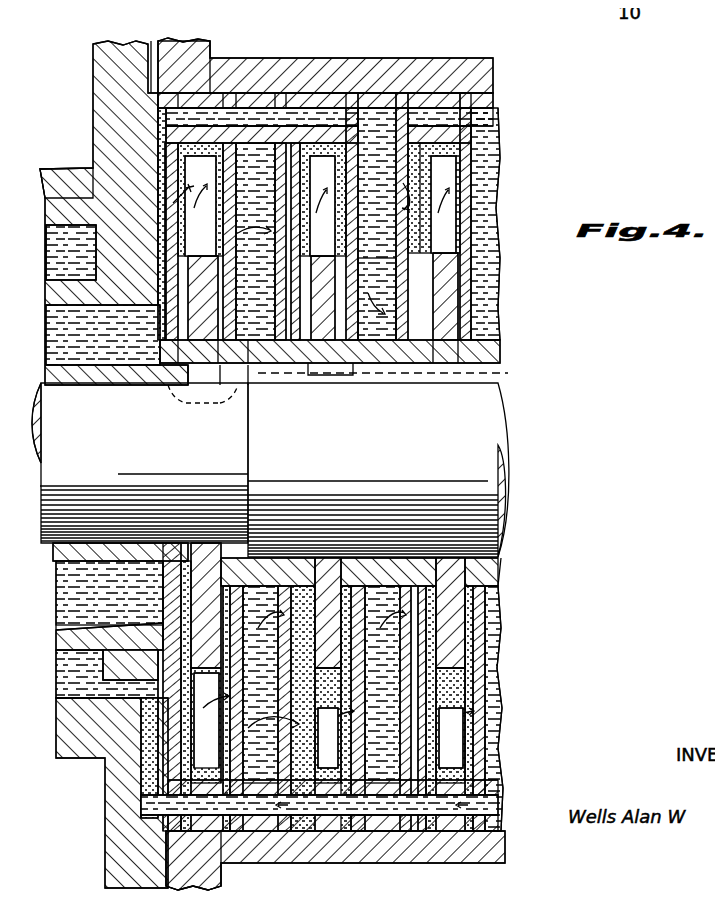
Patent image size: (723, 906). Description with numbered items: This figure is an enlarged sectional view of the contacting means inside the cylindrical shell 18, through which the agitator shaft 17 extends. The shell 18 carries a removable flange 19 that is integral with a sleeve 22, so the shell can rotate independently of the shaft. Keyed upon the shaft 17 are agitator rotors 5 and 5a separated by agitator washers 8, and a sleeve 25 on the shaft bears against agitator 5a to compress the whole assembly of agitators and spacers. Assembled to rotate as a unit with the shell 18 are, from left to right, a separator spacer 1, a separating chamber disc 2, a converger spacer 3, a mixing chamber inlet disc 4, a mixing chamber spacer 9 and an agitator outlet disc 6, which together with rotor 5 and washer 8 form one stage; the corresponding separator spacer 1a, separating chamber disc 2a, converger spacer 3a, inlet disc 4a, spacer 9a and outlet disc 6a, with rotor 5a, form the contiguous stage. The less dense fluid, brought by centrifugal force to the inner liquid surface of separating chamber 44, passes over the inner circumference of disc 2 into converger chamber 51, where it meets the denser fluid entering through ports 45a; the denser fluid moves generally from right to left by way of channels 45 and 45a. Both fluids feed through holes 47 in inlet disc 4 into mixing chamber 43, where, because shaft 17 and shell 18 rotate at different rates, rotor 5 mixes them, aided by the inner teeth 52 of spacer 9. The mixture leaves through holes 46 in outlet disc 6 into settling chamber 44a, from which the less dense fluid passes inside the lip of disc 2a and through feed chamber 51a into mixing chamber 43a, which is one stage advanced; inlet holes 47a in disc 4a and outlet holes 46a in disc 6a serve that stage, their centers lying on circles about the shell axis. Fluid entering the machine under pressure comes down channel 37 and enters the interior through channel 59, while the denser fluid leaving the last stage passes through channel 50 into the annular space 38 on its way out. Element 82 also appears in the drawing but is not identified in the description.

The separator spacer 1 is at (488, 90).
The separator spacer 1a is at (240, 88).
The separating chamber disc 2 is at (387, 100).
The separating chamber disc 2a is at (263, 88).
The converger spacer 3 is at (402, 88).
The converger spacer 3a is at (280, 88).
The mixing chamber inlet disc 4 is at (158, 97).
The mixing chamber inlet disc 4a is at (287, 88).
The agitator rotor 5 is at (198, 380).
The agitator rotor 5a is at (322, 367).
The agitator outlet disc 6 is at (215, 88).
The agitator outlet disc 6a is at (337, 88).
The agitator washer 8 is at (492, 340).
The mixing chamber spacer 9 is at (185, 90).
The mixing chamber spacer 9a is at (310, 88).
The agitator shaft 17 is at (487, 403).
The cylindrical shell 18 is at (477, 67).
The removable flange 19 is at (92, 52).
The sleeve 22 is at (58, 170).
The sleeve 25 is at (70, 548).
The channel 37 is at (103, 335).
The annular space 38 is at (71, 252).
The mixing chamber 43 is at (180, 750).
The mixing chamber 43a is at (323, 767).
The separating chamber 44 is at (344, 663).
The settling chamber 44a is at (487, 663).
The channels 45 is at (210, 805).
The ports 45a is at (192, 100).
The holes 46 is at (520, 696).
The mixing chamber outlet holes 46a is at (377, 286).
The holes 47 is at (165, 195).
The inlet holes 47a is at (254, 215).
The channel 50 is at (112, 680).
The converger chamber 51 is at (334, 694).
The feed chamber 51a is at (272, 738).
The inner teeth 52 is at (443, 773).
The channel 59 is at (152, 145).
The chamber 82 is at (70, 618).